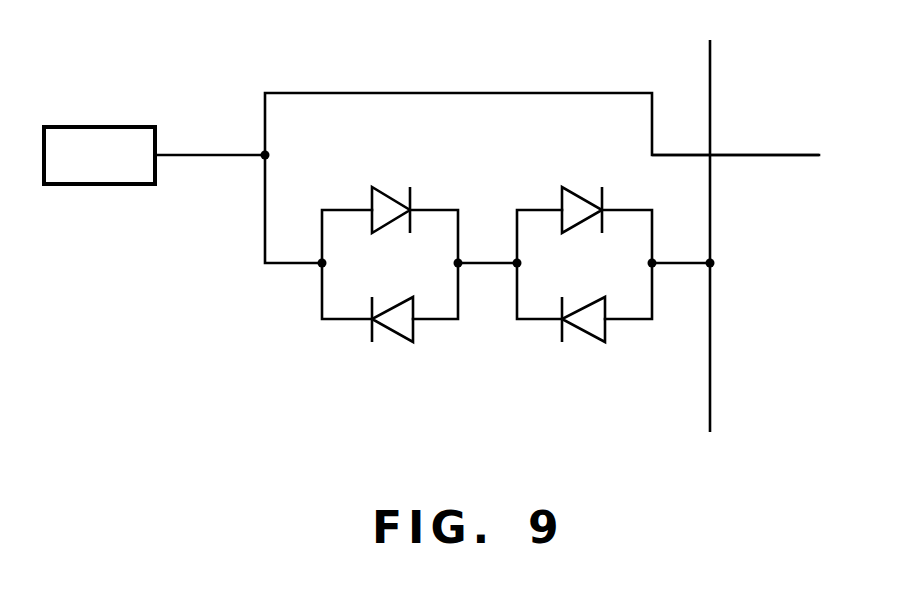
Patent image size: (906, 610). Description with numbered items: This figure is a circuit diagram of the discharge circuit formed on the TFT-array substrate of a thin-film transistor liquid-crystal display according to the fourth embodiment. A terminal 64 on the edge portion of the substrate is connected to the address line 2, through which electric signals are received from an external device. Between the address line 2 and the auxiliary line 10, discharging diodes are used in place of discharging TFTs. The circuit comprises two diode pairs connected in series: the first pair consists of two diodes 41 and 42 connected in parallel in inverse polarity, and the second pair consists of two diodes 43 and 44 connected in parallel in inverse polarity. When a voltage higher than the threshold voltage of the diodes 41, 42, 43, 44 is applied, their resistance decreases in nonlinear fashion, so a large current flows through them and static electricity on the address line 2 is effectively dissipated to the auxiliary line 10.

The terminal 64 is at (102, 185).
The auxiliary line 10 is at (712, 368).
The address line 2 is at (772, 156).
The diode 41 is at (398, 192).
The diode 42 is at (390, 343).
The diode 43 is at (588, 192).
The diode 44 is at (580, 345).